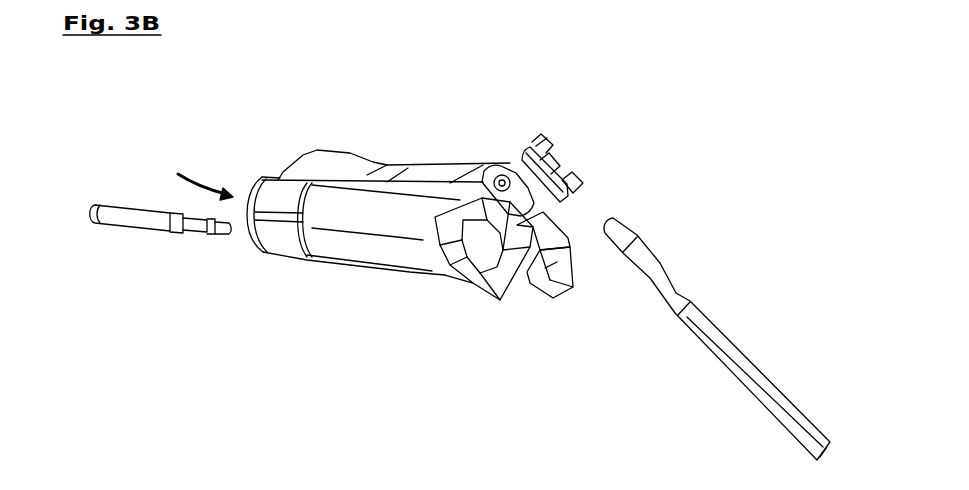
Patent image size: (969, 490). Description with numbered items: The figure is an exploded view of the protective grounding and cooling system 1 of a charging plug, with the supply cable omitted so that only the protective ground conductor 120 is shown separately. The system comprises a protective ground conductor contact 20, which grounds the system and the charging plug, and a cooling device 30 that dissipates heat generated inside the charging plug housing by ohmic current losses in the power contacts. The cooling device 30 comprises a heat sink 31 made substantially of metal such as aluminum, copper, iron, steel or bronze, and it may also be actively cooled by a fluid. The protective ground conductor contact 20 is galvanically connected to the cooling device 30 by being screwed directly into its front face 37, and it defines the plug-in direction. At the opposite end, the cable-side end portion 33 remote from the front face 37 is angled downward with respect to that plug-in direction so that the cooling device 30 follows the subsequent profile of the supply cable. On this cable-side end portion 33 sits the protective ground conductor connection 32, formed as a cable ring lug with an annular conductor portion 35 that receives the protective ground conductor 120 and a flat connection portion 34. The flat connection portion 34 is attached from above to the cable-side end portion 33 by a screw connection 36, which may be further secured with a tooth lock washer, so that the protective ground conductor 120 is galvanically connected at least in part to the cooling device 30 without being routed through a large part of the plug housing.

The protective grounding and cooling system 1 is at (297, 128).
The protective ground conductor contact 20 is at (137, 222).
The cooling device 30 is at (332, 247).
The heat sink 31 is at (398, 237).
The protective ground conductor connection 32 is at (569, 120).
The cable-side end portion 33 is at (505, 233).
The flat connection portion 34 is at (547, 168).
The annular conductor portion 35 is at (584, 184).
The screw connection 36 is at (497, 178).
The front face 37 is at (193, 175).
The protective ground conductor 120 is at (658, 278).